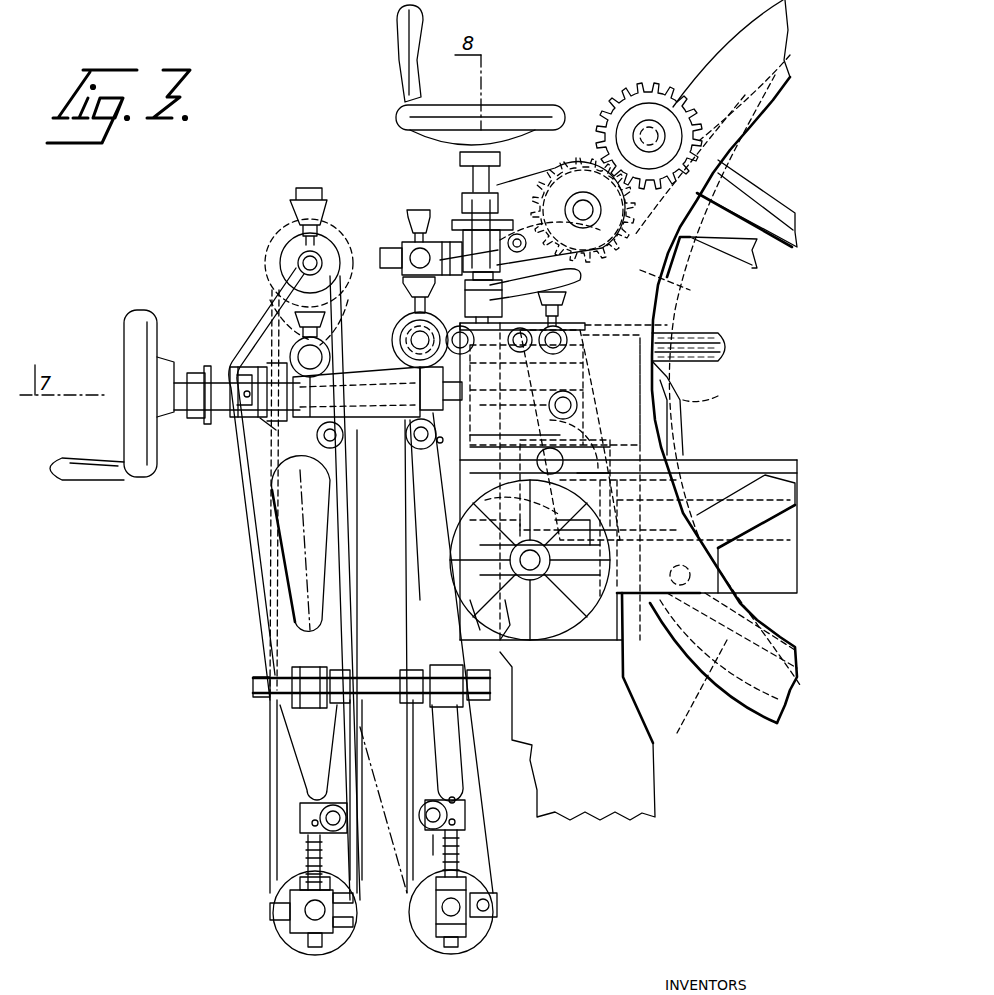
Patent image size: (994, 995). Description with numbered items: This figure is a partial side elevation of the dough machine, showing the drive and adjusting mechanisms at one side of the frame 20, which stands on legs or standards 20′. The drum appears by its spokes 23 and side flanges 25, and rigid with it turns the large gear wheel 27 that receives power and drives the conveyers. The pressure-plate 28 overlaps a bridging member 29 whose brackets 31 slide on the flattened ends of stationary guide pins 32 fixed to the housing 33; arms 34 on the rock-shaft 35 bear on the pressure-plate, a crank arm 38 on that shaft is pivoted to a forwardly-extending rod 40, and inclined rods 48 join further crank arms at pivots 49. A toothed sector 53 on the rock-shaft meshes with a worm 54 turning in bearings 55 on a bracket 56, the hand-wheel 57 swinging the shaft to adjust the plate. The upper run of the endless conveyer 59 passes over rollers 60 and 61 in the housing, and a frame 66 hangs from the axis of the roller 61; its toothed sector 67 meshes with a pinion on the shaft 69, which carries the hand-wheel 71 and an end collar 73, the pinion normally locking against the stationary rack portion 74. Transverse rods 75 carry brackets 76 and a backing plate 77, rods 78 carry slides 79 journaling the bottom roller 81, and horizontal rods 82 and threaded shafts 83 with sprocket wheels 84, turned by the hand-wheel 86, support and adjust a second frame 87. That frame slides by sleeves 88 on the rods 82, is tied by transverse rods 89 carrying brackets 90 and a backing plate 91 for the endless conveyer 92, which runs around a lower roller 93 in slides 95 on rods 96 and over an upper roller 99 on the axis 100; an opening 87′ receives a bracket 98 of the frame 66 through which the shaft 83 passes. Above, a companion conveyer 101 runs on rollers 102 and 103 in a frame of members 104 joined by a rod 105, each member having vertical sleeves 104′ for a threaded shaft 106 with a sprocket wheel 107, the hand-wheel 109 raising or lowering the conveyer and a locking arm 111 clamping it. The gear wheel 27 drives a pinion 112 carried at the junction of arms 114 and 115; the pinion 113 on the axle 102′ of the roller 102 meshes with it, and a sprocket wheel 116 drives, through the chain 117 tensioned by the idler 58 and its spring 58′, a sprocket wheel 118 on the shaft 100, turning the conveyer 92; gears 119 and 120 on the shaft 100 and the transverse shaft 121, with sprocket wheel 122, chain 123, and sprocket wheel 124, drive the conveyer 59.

The frame 20 is at (703, 535).
The legs or standards 20′ is at (557, 706).
The spokes 23 is at (746, 427).
The flanges 25 is at (745, 680).
The gear wheel 27 is at (737, 122).
The pressure-plate 28 is at (680, 660).
The bridging member 29 is at (566, 310).
The bracket 31 is at (548, 386).
The guide pins 32 is at (577, 400).
The housing 33 is at (540, 433).
The arms 34 is at (545, 425).
The rock-shaft 35 is at (540, 470).
The crank arm 38 is at (493, 522).
The forwardly-extending rod 40 is at (720, 470).
The inclined rods 48 is at (699, 692).
The pivotal connection 49 is at (612, 540).
The toothed sector 53 is at (683, 400).
The worm 54 is at (688, 450).
The bearings 55 is at (716, 405).
The bracket 56 is at (655, 605).
The hand-wheel 57 is at (700, 343).
The tension roller or idler 58 is at (460, 287).
The spring 58′ is at (465, 305).
The endless conveyer 59 is at (403, 578).
The roller 60 is at (567, 338).
The roller 61 is at (412, 333).
The swinging frame 66 is at (462, 805).
The toothed sector 67 is at (572, 538).
The shaft 69 is at (508, 640).
The hand-wheel 71 is at (490, 625).
The collar 73 is at (537, 582).
The stationary rack portion 74 is at (539, 536).
The transverse rods 75 is at (440, 812).
The brackets 76 is at (427, 851).
The plate 77 is at (412, 755).
The rods 78 is at (460, 842).
The slides 79 is at (445, 930).
The bottom roller 81 is at (483, 922).
The horizontal rods 82 is at (372, 680).
The shafts 83 is at (290, 355).
The sprocket wheel 84 is at (206, 422).
The hand-wheel 86 is at (126, 344).
The frame 87 is at (262, 487).
The opening 87′ is at (266, 423).
The sleeves 88 is at (264, 706).
The transverse rods 89 is at (323, 436).
The brackets 90 is at (325, 448).
The plate 91 is at (358, 778).
The endless conveyer 92 is at (375, 618).
The pulley or roller 93 is at (305, 958).
The slides 95 is at (292, 925).
The rods 96 is at (302, 862).
The bracket 98 is at (367, 432).
The pulley or roller 99 is at (280, 258).
The shaft 100 is at (303, 265).
The companion conveyer 101 is at (462, 227).
The roller 102 is at (585, 192).
The shaft or axle 102′ is at (562, 190).
The roller 103 is at (405, 248).
The frame members 104 is at (690, 268).
The vertical sleeves 104′ is at (466, 200).
The transverse rod 105 is at (513, 225).
The vertical shaft 106 is at (490, 150).
The sprocket wheel 107 is at (405, 215).
The hand-wheel 109 is at (447, 108).
The locking arm 111 is at (585, 290).
The pinion 112 is at (625, 100).
The pinion 113 is at (500, 186).
The arm 114 is at (748, 196).
The arm 115 is at (608, 228).
The sprocket wheel 116 is at (712, 257).
The chain 117 is at (408, 108).
The sprocket wheel 118 is at (300, 218).
The gear 119 is at (272, 240).
The gear 120 is at (275, 297).
The transverse shaft 121 is at (305, 352).
The sprocket wheel 122 is at (268, 368).
The chain 123 is at (313, 545).
The sprocket wheel 124 is at (482, 946).